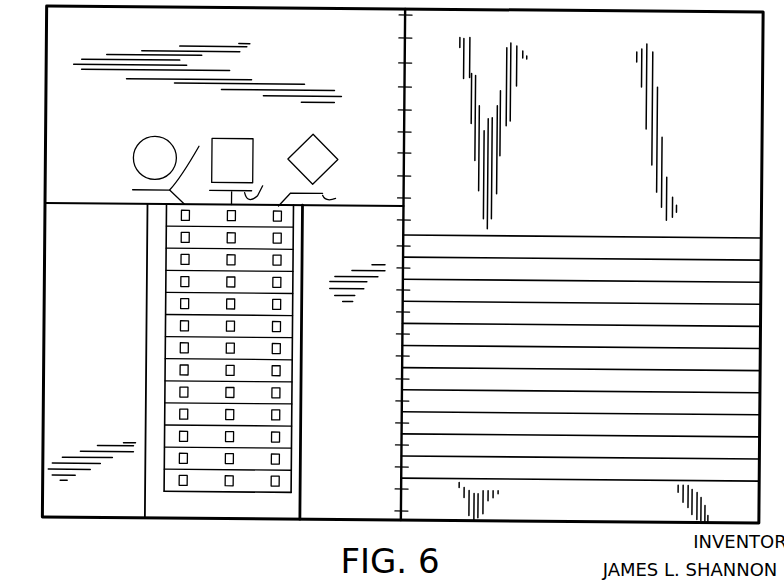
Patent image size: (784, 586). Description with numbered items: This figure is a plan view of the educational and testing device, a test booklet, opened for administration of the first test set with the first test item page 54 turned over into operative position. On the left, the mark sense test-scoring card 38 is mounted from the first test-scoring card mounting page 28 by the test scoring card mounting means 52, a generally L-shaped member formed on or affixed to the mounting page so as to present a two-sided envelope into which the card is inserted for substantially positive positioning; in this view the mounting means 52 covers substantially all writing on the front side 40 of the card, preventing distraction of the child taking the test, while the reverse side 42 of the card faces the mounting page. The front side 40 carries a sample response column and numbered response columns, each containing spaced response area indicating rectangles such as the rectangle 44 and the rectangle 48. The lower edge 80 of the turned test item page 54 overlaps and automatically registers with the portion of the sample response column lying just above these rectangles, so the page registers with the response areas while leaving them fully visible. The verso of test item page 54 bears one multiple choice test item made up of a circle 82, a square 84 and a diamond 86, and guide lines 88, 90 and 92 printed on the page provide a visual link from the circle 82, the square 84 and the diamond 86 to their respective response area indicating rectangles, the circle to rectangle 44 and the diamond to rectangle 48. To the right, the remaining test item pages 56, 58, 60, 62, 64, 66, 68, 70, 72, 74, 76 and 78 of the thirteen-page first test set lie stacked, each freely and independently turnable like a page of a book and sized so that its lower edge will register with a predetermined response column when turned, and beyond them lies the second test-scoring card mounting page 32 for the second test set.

The first test-scoring card mounting page 28 is at (107, 511).
The second test-scoring card mounting page 32 is at (555, 515).
The mark sense test-scoring card 38 is at (295, 381).
The front side of test-scoring card 40 is at (250, 486).
The reverse side of test-scoring card 42 is at (238, 219).
The response area indicating rectangle 44 is at (178, 221).
The response area indicating rectangle 48 is at (282, 219).
The test scoring card mounting means 52 is at (147, 367).
The test item page 54 is at (286, 47).
The test item page 56 is at (558, 225).
The test item page 58 is at (579, 258).
The test item page 60 is at (592, 281).
The test item page 62 is at (604, 303).
The test item page 64 is at (582, 325).
The test item page 66 is at (594, 347).
The test item page 68 is at (607, 369).
The test item page 70 is at (582, 391).
The test item page 72 is at (594, 413).
The test item page 74 is at (607, 435).
The test item page 76 is at (579, 457).
The test item page 78 is at (591, 479).
The lower edge of test item page 80 is at (100, 208).
The circle 82 is at (169, 139).
The square 84 is at (254, 154).
The diamond 86 is at (327, 144).
The guide line 88 is at (192, 162).
The guide line 90 is at (262, 181).
The guide line 92 is at (335, 199).